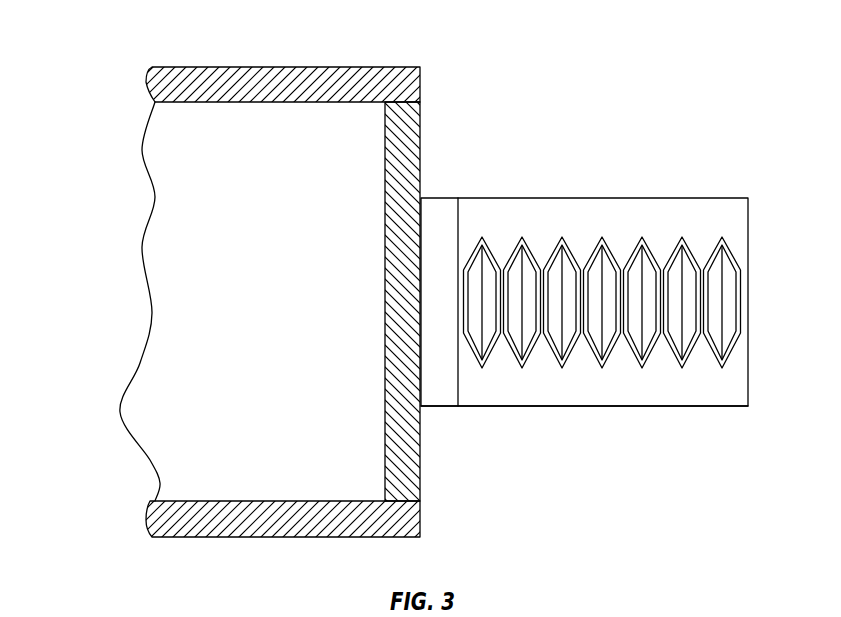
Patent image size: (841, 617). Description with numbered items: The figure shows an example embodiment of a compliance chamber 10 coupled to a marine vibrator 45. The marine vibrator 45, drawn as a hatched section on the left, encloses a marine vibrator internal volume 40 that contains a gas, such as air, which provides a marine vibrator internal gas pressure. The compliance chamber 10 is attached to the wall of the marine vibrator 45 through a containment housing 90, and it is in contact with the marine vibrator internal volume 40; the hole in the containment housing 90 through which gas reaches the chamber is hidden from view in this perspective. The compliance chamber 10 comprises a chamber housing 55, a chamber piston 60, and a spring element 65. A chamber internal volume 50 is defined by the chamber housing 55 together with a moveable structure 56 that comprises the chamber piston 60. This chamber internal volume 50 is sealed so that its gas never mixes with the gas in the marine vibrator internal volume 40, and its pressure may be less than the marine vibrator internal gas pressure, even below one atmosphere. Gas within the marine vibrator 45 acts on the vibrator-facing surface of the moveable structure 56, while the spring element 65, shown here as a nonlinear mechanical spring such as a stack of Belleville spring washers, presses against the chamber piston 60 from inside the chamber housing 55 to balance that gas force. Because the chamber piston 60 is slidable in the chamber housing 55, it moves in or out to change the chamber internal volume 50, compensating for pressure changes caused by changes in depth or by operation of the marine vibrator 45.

The marine vibrator 45 is at (108, 58).
The marine vibrator internal volume 40 is at (362, 152).
The containment housing 90 is at (190, 526).
The compliance chamber 10 is at (648, 168).
The chamber internal volume 50 is at (730, 200).
The moveable structure 56 is at (440, 200).
The chamber piston 60 is at (439, 384).
The chamber housing 55 is at (693, 408).
The spring element 65 is at (725, 293).